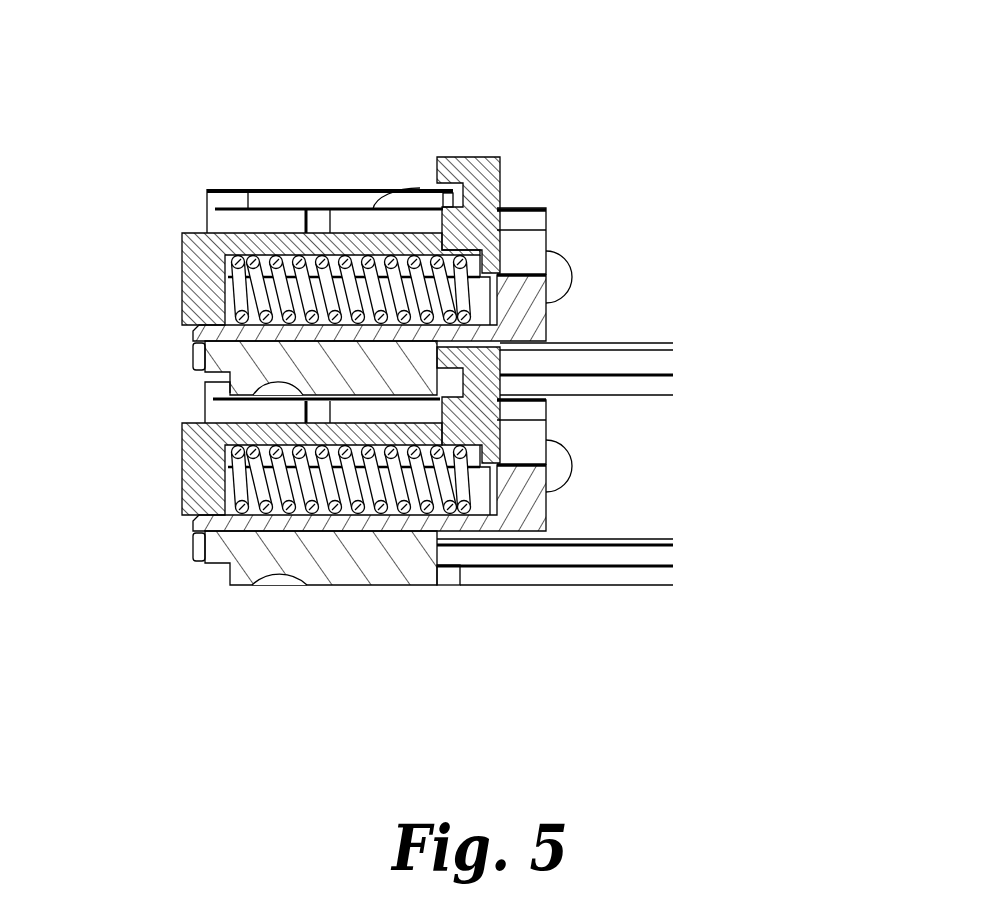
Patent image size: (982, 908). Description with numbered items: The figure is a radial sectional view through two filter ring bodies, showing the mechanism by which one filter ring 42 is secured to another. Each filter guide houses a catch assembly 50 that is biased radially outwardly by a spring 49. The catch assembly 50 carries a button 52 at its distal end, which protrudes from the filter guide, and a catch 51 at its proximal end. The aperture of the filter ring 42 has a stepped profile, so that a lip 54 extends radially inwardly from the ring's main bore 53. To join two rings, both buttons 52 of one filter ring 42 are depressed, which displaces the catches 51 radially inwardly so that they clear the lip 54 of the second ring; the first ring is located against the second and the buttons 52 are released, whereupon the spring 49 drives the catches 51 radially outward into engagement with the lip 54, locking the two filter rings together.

The filter ring 42 is at (322, 562).
The spring 49 is at (253, 477).
The catch assembly 50 is at (180, 400).
The catch 51 is at (438, 165).
The button 52 is at (182, 473).
The main bore 53 is at (437, 550).
The lip 54 is at (450, 575).